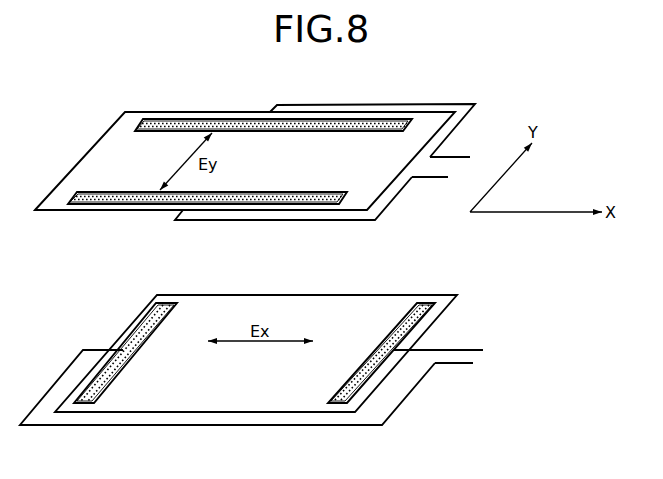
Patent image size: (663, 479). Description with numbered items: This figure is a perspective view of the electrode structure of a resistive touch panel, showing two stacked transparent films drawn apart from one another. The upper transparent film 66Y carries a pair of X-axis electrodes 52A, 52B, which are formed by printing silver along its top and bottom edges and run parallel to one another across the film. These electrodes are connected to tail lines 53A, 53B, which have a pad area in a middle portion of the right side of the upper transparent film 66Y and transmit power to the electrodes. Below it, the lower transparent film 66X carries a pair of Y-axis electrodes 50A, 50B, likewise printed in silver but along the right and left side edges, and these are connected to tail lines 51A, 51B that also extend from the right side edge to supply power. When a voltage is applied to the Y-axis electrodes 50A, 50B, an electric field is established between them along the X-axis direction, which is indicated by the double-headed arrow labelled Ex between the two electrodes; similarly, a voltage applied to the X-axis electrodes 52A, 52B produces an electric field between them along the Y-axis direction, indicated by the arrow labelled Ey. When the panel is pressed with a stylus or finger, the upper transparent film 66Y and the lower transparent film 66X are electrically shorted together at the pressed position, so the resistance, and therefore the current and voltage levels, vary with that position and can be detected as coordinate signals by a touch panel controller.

The upper transparent film 66Y is at (245, 111).
The X-axis electrode 52A is at (203, 105).
The X-axis electrode 52B is at (135, 206).
The tail line 53A is at (448, 157).
The tail line 53B is at (420, 177).
The lower transparent film 66X is at (370, 295).
The Y-axis electrode 50A is at (162, 303).
The Y-axis electrode 50B is at (448, 303).
The tail line 51A is at (465, 350).
The tail line 51B is at (457, 365).